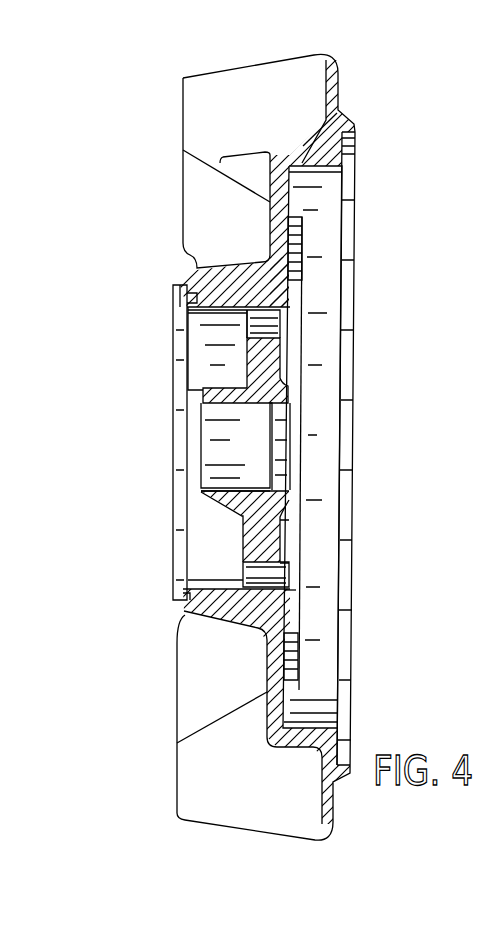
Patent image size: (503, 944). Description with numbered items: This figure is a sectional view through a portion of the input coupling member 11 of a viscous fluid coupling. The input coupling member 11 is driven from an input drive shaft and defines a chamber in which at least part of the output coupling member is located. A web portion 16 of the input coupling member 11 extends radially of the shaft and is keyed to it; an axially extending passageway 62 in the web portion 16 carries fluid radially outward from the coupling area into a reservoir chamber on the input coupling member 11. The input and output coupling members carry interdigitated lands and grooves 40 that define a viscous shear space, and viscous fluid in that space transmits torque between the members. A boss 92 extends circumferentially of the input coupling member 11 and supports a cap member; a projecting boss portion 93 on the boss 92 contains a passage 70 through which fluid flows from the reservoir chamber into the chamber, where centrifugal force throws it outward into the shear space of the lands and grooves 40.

The input coupling member 11 is at (200, 827).
The interdigitated lands and grooves 40 is at (308, 248).
The web portion 16 is at (262, 370).
The axially extending passageway 62 is at (250, 332).
The passage 70 is at (243, 572).
The projecting boss portion 93 is at (285, 548).
The boss 92 is at (295, 595).